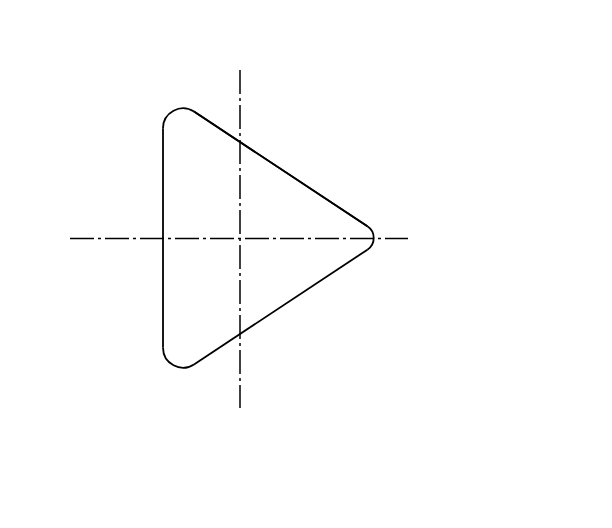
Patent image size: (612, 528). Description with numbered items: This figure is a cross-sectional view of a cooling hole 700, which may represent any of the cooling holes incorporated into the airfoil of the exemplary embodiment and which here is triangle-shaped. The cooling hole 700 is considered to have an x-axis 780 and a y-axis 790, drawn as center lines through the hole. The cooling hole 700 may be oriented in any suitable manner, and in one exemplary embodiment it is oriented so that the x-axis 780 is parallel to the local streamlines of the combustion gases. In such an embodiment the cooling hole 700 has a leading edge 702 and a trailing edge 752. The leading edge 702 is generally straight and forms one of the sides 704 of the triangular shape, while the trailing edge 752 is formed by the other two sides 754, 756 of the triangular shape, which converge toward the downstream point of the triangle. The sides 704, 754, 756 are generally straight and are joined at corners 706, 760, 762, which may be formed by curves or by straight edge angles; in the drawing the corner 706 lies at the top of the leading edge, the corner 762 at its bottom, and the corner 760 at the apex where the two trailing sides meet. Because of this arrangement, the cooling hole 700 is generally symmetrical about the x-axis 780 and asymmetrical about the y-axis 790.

The cooling hole 700 is at (261, 268).
The leading edge 702 is at (247, 237).
The side 704 is at (163, 212).
The corner 706 is at (176, 109).
The trailing edge 752 is at (302, 169).
The side 754 is at (329, 199).
The side 756 is at (307, 290).
The corner 760 is at (373, 235).
The corner 762 is at (169, 367).
The x-axis 780 is at (400, 241).
The y-axis 790 is at (241, 77).